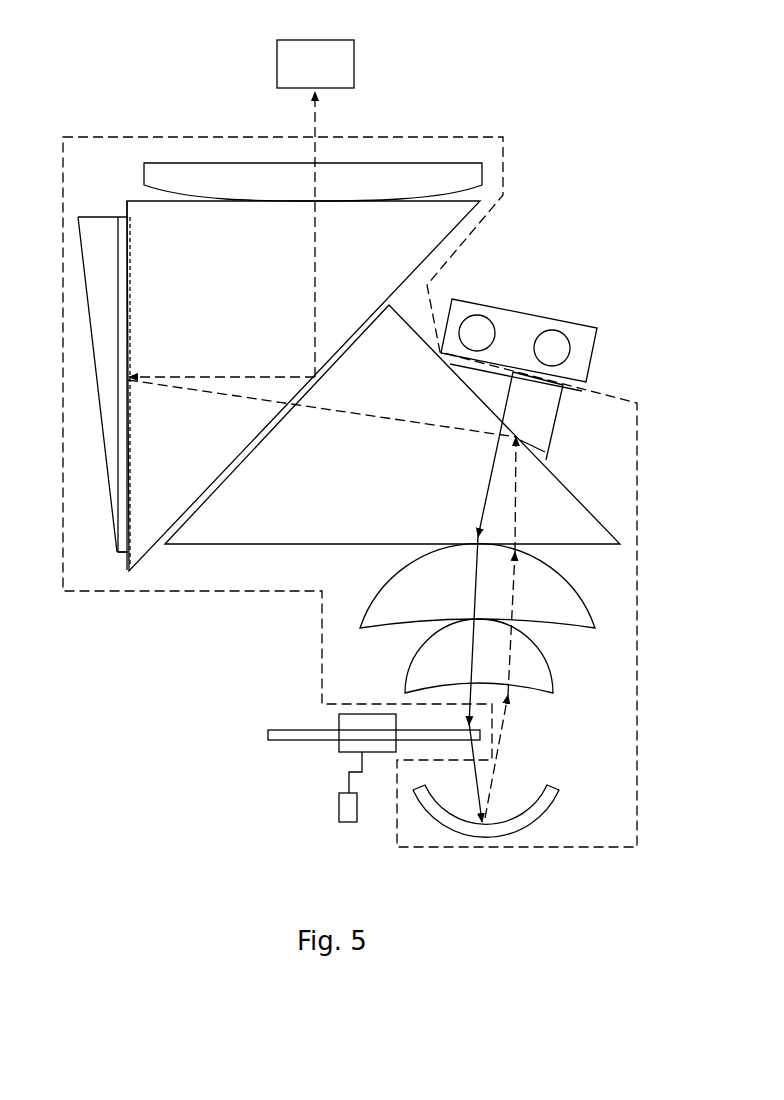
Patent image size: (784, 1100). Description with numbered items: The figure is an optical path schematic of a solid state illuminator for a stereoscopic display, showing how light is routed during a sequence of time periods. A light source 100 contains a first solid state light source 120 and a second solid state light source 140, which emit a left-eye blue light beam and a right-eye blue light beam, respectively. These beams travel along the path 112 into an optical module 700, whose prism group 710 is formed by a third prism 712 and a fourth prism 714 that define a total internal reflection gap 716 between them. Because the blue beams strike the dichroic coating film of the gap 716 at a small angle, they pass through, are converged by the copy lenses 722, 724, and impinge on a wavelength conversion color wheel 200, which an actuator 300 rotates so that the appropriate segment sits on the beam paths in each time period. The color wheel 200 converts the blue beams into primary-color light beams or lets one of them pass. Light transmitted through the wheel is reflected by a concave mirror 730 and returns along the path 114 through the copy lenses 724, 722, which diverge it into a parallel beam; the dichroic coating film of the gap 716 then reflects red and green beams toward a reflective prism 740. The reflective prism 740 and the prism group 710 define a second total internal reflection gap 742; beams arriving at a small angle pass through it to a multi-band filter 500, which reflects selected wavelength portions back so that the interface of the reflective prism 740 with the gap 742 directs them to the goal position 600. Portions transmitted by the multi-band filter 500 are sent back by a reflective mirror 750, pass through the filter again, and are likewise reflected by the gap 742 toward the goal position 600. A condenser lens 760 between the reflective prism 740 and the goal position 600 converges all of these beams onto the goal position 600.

The light source 100 is at (597, 333).
The path 112 is at (518, 397).
The path 114 is at (470, 770).
The first solid state light source 120 is at (485, 316).
The second solid state light source 140 is at (557, 331).
The wavelength conversion color wheel 200 is at (282, 741).
The actuator 300 is at (348, 822).
The multi-band filter 500 is at (119, 553).
The goal position 600 is at (354, 62).
The optical module 700 is at (638, 695).
The prism group 710 is at (598, 425).
The third prism 712 is at (533, 427).
The fourth prism 714 is at (547, 485).
The total internal reflection gap 716 is at (528, 460).
The copy lens 722 is at (557, 567).
The copy lens 724 is at (542, 648).
The concave mirror 730 is at (550, 790).
The reflective prism 740 is at (143, 560).
The total internal reflection gap 742 is at (214, 488).
The reflective mirror 750 is at (90, 328).
The condenser lens 760 is at (143, 174).